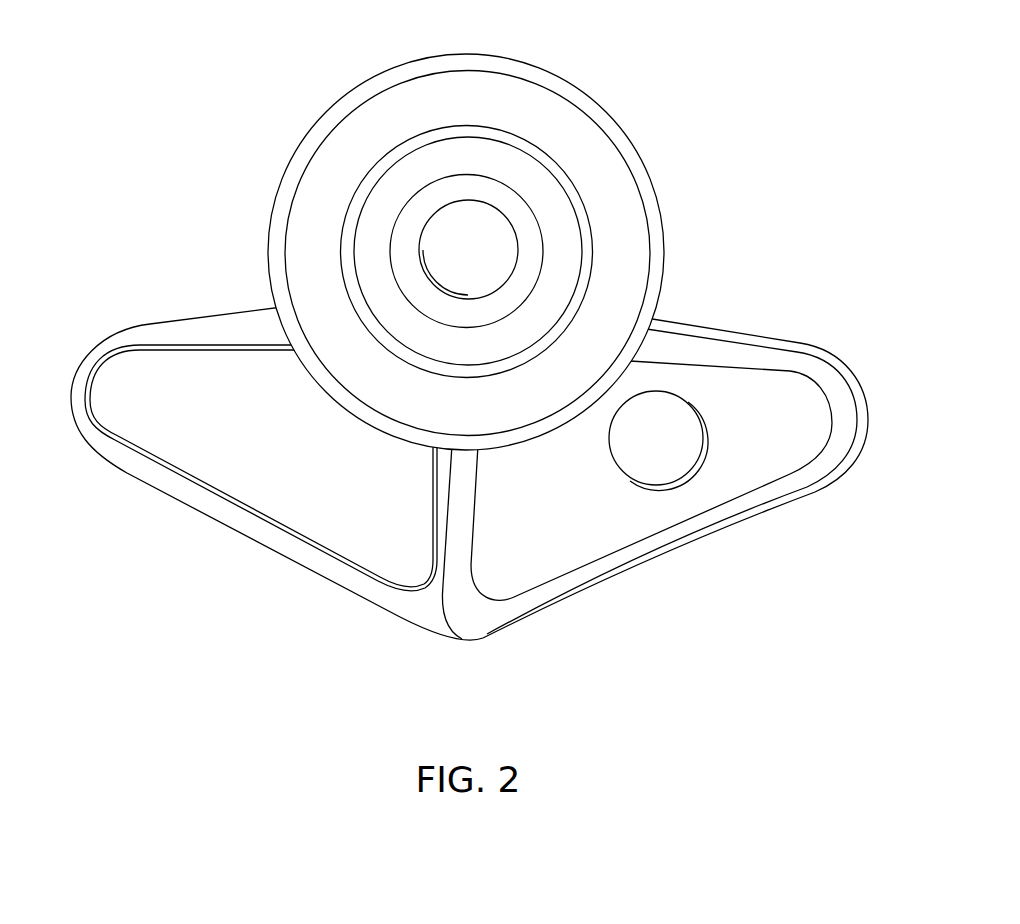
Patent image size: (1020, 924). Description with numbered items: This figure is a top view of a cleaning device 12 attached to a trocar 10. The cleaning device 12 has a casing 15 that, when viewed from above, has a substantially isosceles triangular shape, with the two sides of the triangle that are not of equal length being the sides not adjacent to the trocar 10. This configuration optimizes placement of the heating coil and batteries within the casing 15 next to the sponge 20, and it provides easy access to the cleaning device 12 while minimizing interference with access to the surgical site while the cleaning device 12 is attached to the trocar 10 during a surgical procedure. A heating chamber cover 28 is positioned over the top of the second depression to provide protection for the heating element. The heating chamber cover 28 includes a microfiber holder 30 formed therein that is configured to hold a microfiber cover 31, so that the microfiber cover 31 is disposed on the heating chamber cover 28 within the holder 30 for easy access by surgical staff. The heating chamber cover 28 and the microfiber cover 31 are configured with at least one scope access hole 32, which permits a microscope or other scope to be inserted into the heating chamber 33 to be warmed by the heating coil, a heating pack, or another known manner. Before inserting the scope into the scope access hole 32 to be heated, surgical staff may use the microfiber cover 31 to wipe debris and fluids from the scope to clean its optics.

The trocar 10 is at (620, 88).
The cleaning device 12 is at (785, 542).
The casing 15 is at (420, 608).
The sponge 20 is at (300, 483).
The heating chamber cover 28 is at (480, 627).
The microfiber holder 30 is at (608, 556).
The microfiber cover 31 is at (782, 413).
The scope access hole 32 is at (698, 482).
The heating chamber 33 is at (673, 427).